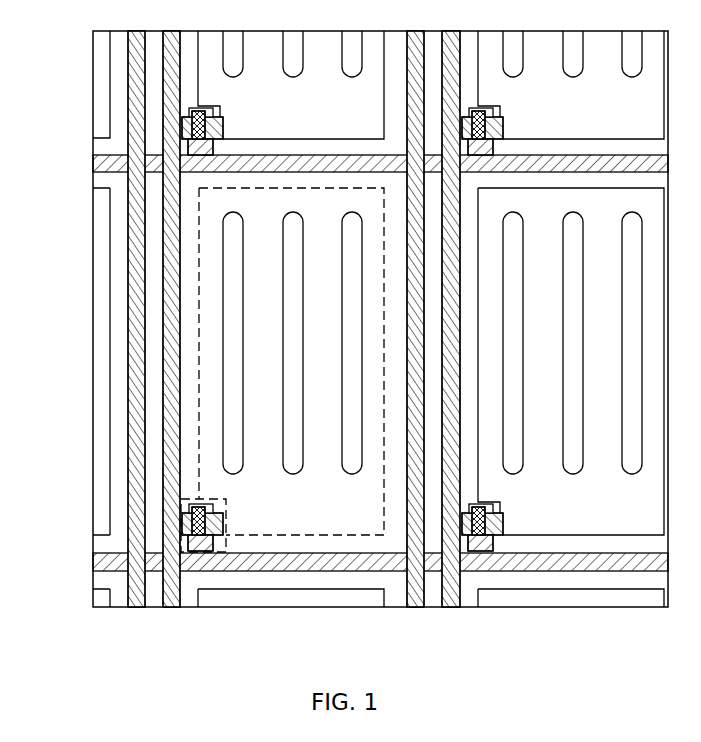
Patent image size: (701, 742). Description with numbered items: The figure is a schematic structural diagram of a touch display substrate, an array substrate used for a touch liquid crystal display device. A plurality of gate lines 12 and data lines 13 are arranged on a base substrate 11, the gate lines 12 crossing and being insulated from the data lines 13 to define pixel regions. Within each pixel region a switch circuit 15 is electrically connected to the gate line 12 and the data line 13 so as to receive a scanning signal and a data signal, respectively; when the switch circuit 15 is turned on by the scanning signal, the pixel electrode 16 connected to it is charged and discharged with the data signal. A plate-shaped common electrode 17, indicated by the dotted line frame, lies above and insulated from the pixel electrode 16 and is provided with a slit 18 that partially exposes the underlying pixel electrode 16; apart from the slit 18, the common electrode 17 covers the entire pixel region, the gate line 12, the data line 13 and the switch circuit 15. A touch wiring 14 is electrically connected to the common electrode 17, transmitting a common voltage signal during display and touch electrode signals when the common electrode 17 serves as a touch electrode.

The base substrate 11 is at (93, 85).
The gate line 12 is at (102, 160).
The data line 13 is at (167, 177).
The touch wiring 14 is at (137, 245).
The switch circuit 15 is at (182, 508).
The pixel electrode 16 is at (199, 247).
The common electrode 17 is at (192, 307).
The slit 18 is at (233, 342).